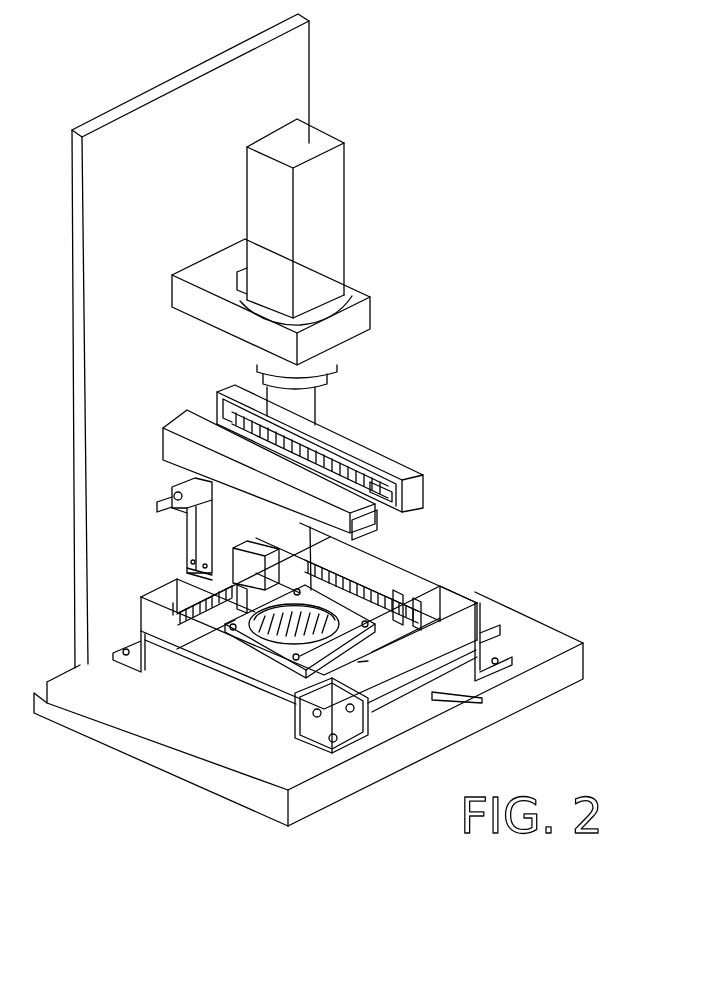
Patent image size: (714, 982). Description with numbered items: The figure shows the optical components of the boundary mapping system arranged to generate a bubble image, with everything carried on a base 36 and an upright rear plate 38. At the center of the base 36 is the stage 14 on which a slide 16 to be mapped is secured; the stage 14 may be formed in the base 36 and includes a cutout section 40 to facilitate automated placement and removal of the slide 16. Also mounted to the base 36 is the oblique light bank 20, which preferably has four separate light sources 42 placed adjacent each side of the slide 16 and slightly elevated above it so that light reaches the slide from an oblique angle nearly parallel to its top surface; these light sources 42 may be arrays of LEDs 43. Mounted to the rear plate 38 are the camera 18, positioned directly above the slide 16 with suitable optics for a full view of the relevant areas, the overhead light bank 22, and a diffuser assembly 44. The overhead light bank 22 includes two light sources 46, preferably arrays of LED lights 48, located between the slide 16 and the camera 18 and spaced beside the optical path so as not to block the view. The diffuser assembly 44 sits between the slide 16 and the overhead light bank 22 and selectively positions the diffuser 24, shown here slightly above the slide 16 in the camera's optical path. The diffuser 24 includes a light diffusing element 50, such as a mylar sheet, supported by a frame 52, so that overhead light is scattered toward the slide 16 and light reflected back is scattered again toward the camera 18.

The stage 14 is at (398, 643).
The slide 16 is at (390, 663).
The camera 18 is at (410, 247).
The oblique light bank 20 is at (490, 612).
The overhead light bank 22 is at (399, 452).
The diffuser 24 is at (244, 659).
The base 36 is at (552, 645).
The rear plate 38 is at (292, 63).
The cutout section 40 is at (389, 751).
The light sources 42 is at (277, 702).
The LEDs 43 is at (395, 593).
The diffuser assembly 44 is at (187, 538).
The light sources 46 is at (182, 425).
The LED lights 48 is at (347, 455).
The light diffusing element 50 is at (287, 642).
The frame 52 is at (244, 632).